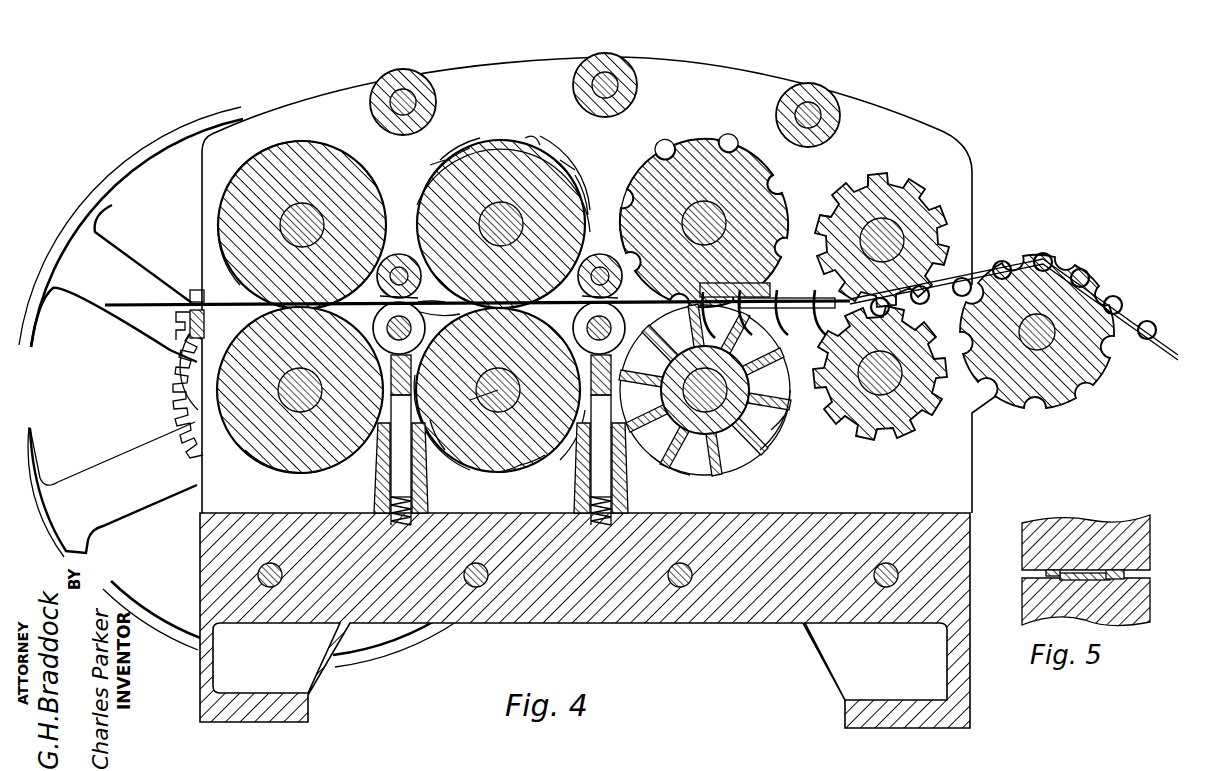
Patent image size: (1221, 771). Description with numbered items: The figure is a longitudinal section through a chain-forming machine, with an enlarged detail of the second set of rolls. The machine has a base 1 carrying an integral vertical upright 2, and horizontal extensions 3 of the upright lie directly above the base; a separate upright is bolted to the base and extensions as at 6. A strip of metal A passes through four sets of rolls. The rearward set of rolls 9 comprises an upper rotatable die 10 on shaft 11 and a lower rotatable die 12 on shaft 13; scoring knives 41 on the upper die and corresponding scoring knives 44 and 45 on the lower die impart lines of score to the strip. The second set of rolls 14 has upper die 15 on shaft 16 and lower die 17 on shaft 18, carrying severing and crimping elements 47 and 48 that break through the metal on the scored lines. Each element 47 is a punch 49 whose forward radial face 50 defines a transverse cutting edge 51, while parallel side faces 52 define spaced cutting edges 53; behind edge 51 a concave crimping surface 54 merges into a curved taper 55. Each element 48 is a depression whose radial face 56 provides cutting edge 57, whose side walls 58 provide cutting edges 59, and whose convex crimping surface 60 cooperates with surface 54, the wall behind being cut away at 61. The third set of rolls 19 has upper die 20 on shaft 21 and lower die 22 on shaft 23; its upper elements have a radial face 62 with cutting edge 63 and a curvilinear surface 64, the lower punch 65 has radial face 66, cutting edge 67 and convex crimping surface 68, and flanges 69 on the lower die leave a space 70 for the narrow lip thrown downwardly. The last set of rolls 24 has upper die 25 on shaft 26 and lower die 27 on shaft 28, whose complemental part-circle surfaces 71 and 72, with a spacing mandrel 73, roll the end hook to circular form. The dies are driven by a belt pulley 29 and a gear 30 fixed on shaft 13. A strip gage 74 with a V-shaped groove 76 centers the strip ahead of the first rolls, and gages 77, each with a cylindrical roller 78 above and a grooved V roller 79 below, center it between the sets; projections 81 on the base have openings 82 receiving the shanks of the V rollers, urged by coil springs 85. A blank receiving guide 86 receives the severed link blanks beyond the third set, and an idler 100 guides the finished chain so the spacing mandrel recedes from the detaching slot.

In FIG. 4, the base 1 is at (945, 605).
In FIG. 4, the vertical upright 2 is at (960, 477).
In FIG. 4, the horizontal extensions 3 is at (605, 88).
In FIG. 4, the bolts 6 is at (620, 88).
In FIG. 4, the rearward set of rolls 9 is at (377, 212).
In FIG. 4, the upper rotatable die 10 is at (298, 228).
In FIG. 4, the shaft 11 is at (300, 246).
In FIG. 4, the lower rotatable die 12 is at (293, 401).
In FIG. 4, the shaft 13 is at (283, 395).
In FIG. 4, the second set of rolls 14 is at (498, 206).
In FIG. 4, the upper rotatable die 15 is at (455, 190).
In FIG. 4, the shaft 16 is at (498, 220).
In FIG. 4, the lower rotatable die 17 is at (499, 408).
In FIG. 4, the shaft 18 is at (490, 395).
In FIG. 4, the third set of rolls 19 is at (697, 212).
In FIG. 4, the upper rotatable die 20 is at (650, 175).
In FIG. 4, the shaft 21 is at (688, 215).
In FIG. 4, the lower rotatable die 22 is at (713, 402).
In FIG. 4, the shaft 23 is at (655, 450).
In FIG. 4, the last set of rolls 24 is at (880, 228).
In FIG. 4, the upper rotatable die 25 is at (900, 195).
In FIG. 4, the shaft 26 is at (890, 240).
In FIG. 4, the lower rotatable die 27 is at (878, 387).
In FIG. 4, the shaft 28 is at (870, 395).
In FIG. 4, the belt pulley 29 is at (97, 465).
In FIG. 4, the gear 30 is at (170, 380).
In FIG. 4, the scoring knives 41 is at (258, 162).
In FIG. 4, the scoring knives 44 is at (293, 465).
In FIG. 4, the scoring knife 45 is at (275, 470).
In FIG. 4, the severing and crimping element 47 is at (418, 302).
In FIG. 4, the severing and crimping element 48 is at (420, 312).
In FIG. 4, the severing and crimping punch 49 is at (470, 148).
In FIG. 4, the forward radial face 50 is at (535, 150).
In FIG. 4, the transverse cutting edge 51 is at (575, 185).
In FIG. 5, the side faces 52 is at (1088, 573).
In FIG. 5, the cutting edges 53 is at (1115, 578).
In FIG. 4, the concave crimping surface 54 is at (545, 160).
In FIG. 4, the taper 55 is at (560, 170).
In FIG. 4, the radial face 56 is at (440, 440).
In FIG. 4, the transverse cutting edge 57 is at (500, 400).
In FIG. 5, the side walls 58 is at (1085, 585).
In FIG. 5, the cutting edges 59 is at (1060, 578).
In FIG. 4, the convex crimping surface 60 is at (530, 462).
In FIG. 4, the cut-away portion 61 is at (508, 478).
In FIG. 4, the radial face 62 is at (677, 148).
In FIG. 4, the transverse cutting edge 63 is at (740, 150).
In FIG. 4, the curvilinear surface 64 is at (768, 172).
In FIG. 4, the severing knife or punch 65 is at (668, 470).
In FIG. 4, the radial face 66 is at (722, 465).
In FIG. 4, the cutting edge 67 is at (757, 445).
In FIG. 4, the convex crimping surface 68 is at (773, 408).
In FIG. 4, the flanges 69 is at (765, 430).
In FIG. 4, the space 70 is at (719, 390).
In FIG. 4, the part-circle surface 71 is at (880, 440).
In FIG. 4, the part-circle surface 72 is at (870, 180).
In FIG. 4, the spacing mandrel 73 is at (822, 225).
In FIG. 4, the strip gage 74 is at (202, 326).
In FIG. 4, the V-shaped groove 76 is at (194, 290).
In FIG. 4, the gage 77 is at (499, 266).
In FIG. 4, the cylindrical roller 78 is at (612, 295).
In FIG. 4, the V roller 79 is at (575, 326).
In FIG. 4, the projections 81 is at (580, 472).
In FIG. 4, the opening 82 is at (592, 515).
In FIG. 4, the coil spring 85 is at (612, 515).
In FIG. 4, the blank receiving guide 86 is at (790, 283).
In FIG. 4, the idler 100 is at (1085, 385).
In FIG. 4, the strip A is at (140, 304).